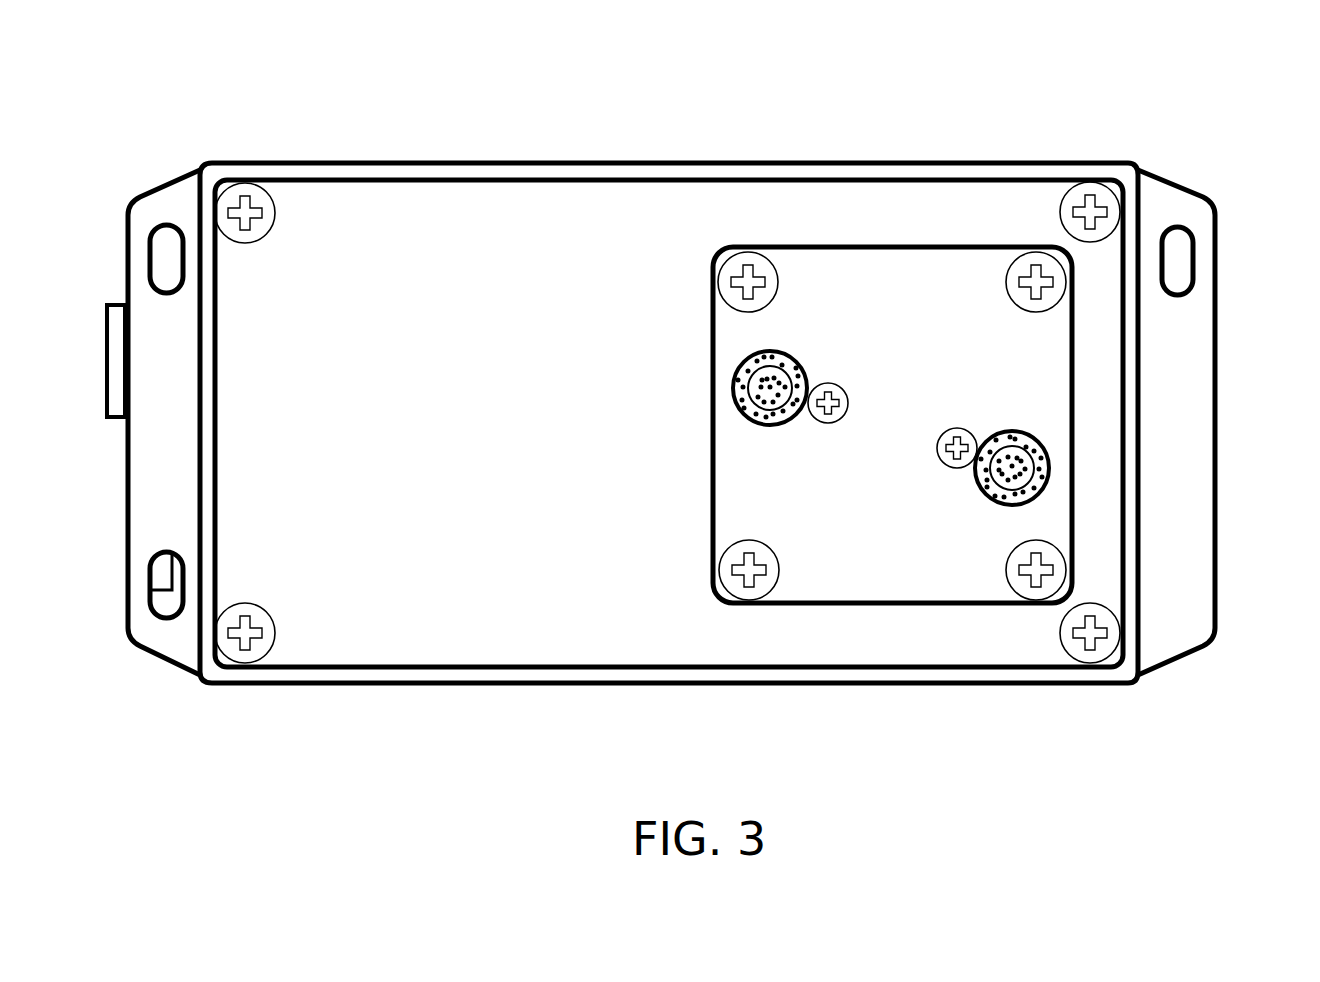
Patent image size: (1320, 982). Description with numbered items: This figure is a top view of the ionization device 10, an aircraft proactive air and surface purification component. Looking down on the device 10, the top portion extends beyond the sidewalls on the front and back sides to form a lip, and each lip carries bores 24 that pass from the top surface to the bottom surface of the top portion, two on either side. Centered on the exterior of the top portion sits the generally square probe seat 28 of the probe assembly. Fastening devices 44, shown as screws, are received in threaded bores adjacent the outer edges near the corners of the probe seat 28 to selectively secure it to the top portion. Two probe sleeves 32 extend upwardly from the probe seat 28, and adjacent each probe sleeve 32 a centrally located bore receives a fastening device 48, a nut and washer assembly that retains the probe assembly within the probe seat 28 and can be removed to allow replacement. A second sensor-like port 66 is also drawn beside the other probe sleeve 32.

The ionization device 10 is at (604, 84).
The bore 24 is at (165, 247).
The probe seat 28 is at (917, 575).
The probe sleeve 32 is at (770, 350).
The fastening device 44 is at (1015, 262).
The fastening device 48 is at (828, 383).
The second sensor (microphone/pressure port) 66 is at (1050, 452).